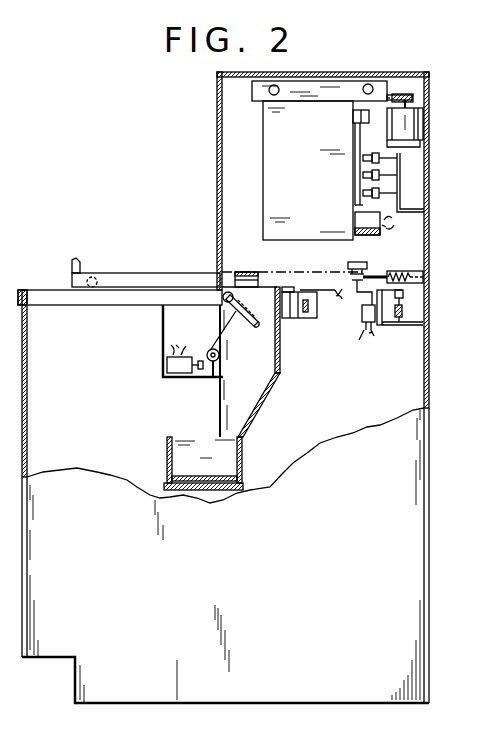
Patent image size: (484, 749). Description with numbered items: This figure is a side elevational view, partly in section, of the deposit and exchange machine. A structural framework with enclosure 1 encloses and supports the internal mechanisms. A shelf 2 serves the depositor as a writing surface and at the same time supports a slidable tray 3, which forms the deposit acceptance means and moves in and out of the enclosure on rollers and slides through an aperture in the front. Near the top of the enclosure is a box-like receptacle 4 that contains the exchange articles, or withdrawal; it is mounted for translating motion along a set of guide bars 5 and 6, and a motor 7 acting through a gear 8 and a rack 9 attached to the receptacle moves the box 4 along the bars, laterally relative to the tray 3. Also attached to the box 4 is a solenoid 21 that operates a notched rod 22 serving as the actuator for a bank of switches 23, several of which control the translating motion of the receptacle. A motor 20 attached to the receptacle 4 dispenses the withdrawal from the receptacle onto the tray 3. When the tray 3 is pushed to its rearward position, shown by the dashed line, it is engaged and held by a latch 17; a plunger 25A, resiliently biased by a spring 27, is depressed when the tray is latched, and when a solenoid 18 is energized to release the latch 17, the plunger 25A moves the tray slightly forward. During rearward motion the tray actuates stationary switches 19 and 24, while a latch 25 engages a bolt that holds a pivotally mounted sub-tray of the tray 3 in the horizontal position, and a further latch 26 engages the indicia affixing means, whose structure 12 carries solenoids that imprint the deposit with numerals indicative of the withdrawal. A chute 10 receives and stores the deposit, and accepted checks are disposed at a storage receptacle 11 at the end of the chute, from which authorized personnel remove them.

The structural framework with enclosure 1 is at (428, 226).
The shelf 2 is at (50, 290).
The slidable tray 3 is at (116, 273).
The box-like receptacle 4 is at (299, 186).
The guide bar 5 is at (252, 93).
The guide bar 6 is at (369, 85).
The motor 7 is at (423, 118).
The gear 8 is at (413, 94).
The rack 9 is at (392, 95).
The chute 10 is at (280, 380).
The storage receptacle 11 is at (182, 475).
The indicia imprinting structure 12 is at (167, 365).
The latch 17 is at (403, 294).
The solenoid 18 is at (362, 315).
The stationary switch 19 is at (348, 265).
The motor 20 is at (376, 230).
The solenoid 21 is at (353, 117).
The notched rod 22 is at (355, 148).
The bank of switches 23 is at (407, 170).
The stationary switch 24 is at (323, 292).
The latch 25 is at (286, 300).
The plunger 25A is at (370, 277).
The latch 26 is at (249, 330).
The spring 27 is at (423, 276).